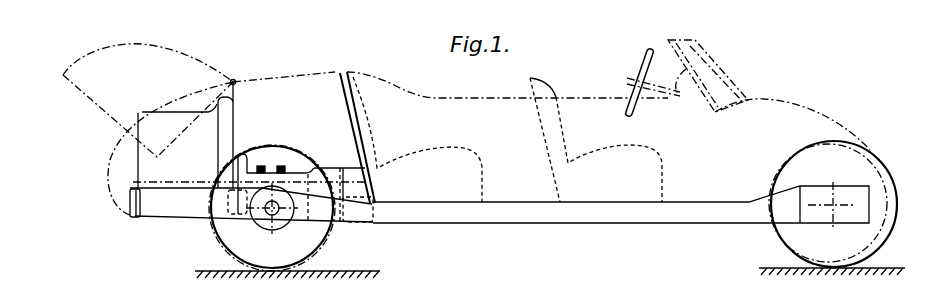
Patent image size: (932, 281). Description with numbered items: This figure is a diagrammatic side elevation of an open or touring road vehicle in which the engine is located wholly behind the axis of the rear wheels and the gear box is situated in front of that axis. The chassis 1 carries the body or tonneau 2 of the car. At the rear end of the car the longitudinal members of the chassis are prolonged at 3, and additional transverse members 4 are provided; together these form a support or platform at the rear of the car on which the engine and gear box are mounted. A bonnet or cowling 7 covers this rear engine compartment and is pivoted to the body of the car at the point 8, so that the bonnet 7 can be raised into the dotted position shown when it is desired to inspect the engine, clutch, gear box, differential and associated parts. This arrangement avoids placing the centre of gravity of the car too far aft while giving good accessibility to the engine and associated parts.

The chassis 1 is at (522, 215).
The body or tonneau 2 is at (488, 117).
The prolonged longitudinal chassis members 3 is at (158, 200).
The additional transverse members 4 is at (232, 215).
The bonnet or cowling 7 is at (92, 63).
The pivot point 8 is at (234, 80).